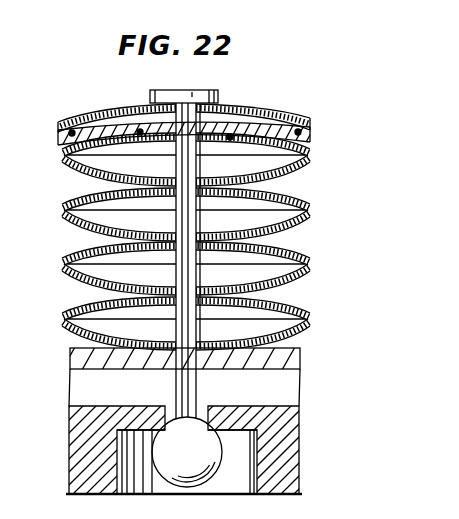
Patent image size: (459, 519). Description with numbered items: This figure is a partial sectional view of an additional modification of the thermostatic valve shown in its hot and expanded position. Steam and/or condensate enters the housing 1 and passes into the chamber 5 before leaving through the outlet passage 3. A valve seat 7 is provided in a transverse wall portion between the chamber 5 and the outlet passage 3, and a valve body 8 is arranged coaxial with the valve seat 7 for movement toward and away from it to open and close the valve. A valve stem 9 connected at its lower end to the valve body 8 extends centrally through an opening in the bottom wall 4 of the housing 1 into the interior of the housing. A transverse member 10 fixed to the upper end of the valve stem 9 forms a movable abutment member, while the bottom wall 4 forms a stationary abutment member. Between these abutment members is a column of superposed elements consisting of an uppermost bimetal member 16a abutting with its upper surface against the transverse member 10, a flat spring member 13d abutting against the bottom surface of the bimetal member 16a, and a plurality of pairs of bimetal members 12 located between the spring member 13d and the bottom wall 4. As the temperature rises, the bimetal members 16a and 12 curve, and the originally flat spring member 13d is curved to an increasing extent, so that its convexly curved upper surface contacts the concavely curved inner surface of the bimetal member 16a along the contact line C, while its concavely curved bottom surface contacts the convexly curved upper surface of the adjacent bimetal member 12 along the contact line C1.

The housing 1 is at (68, 450).
The outlet passage 3 is at (130, 487).
The bottom wall 4 is at (70, 352).
The chamber 5 is at (70, 390).
The valve seat 7 is at (204, 437).
The valve body 8 is at (190, 486).
The valve stem 9 is at (177, 203).
The transverse member 10 is at (150, 97).
The bimetal members 12 is at (309, 212).
The flat spring member 13d is at (61, 150).
The uppermost bimetal member 16a is at (283, 110).
The contact line C is at (71, 130).
The contact line C1 is at (140, 135).